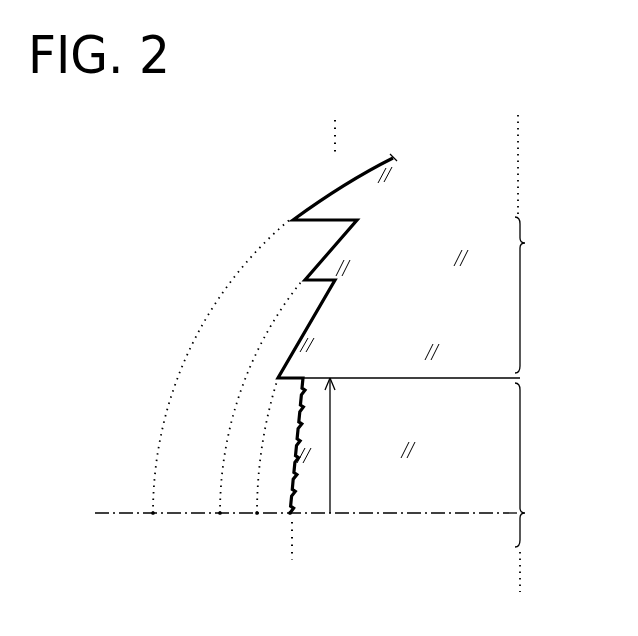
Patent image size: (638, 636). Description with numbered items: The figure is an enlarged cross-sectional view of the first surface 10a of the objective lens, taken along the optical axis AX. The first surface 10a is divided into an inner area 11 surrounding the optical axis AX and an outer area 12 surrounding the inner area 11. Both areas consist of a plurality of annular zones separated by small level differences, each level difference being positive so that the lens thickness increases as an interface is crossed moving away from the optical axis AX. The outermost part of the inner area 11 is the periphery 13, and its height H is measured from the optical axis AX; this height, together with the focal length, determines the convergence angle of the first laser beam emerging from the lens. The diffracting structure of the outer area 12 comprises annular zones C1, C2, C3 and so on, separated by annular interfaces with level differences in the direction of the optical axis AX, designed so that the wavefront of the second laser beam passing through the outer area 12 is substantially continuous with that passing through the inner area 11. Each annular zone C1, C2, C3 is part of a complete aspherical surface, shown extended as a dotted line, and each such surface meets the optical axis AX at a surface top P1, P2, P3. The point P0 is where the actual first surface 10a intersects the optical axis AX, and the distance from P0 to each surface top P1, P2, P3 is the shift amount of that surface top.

The first surface 10a is at (290, 136).
The inner area 11 is at (537, 487).
The outer area 12 is at (537, 244).
The periphery of the inner area 13 is at (419, 381).
The optical axis AX is at (289, 515).
The height of the periphery H is at (332, 460).
The annular zone C1 is at (290, 352).
The annular zone C2 is at (316, 268).
The annular zone C3 is at (318, 210).
The intersection point of the actual first surface with the optical axis P0 is at (290, 516).
The surface top P1 is at (257, 518).
The surface top P2 is at (220, 518).
The surface top P3 is at (153, 518).